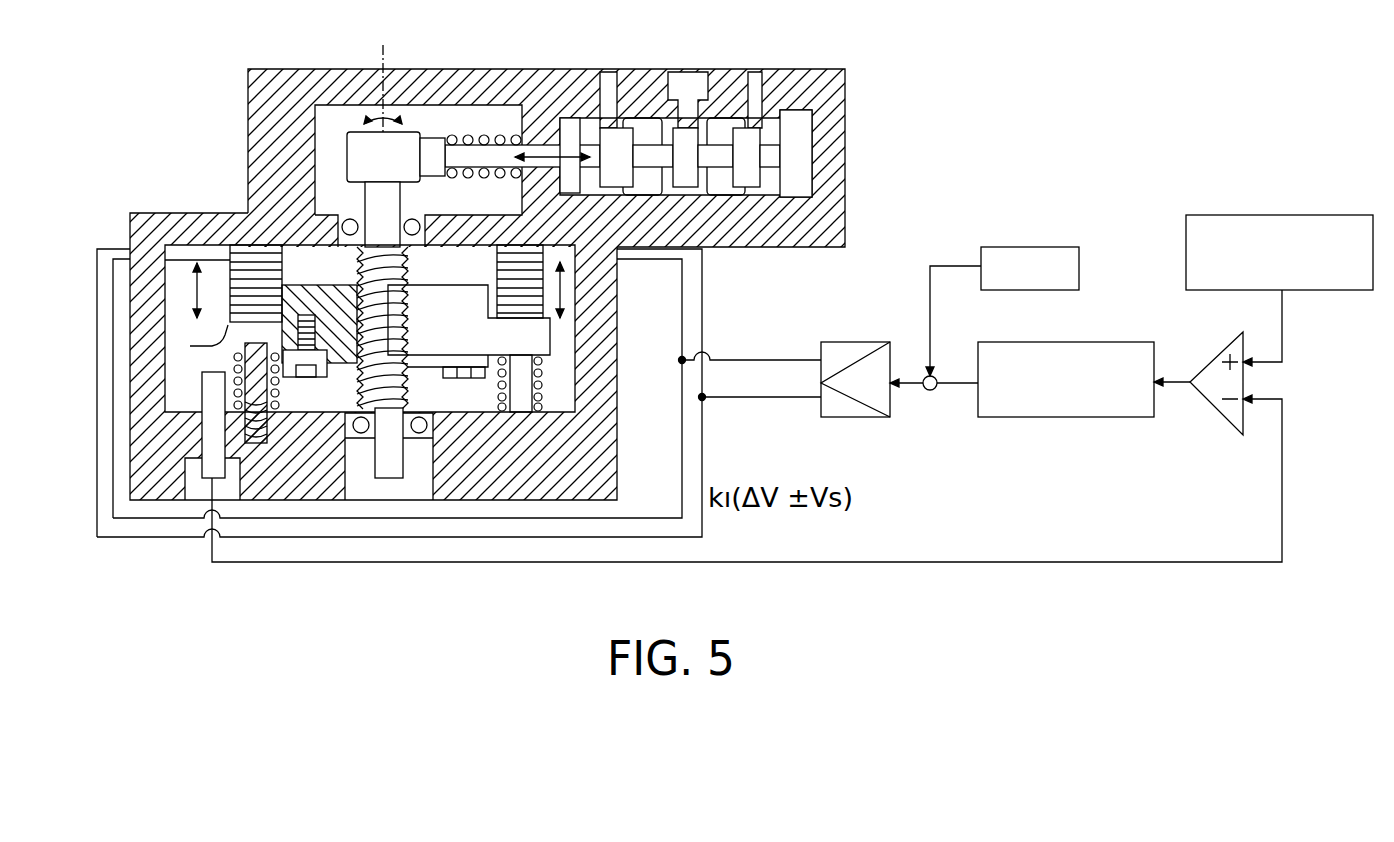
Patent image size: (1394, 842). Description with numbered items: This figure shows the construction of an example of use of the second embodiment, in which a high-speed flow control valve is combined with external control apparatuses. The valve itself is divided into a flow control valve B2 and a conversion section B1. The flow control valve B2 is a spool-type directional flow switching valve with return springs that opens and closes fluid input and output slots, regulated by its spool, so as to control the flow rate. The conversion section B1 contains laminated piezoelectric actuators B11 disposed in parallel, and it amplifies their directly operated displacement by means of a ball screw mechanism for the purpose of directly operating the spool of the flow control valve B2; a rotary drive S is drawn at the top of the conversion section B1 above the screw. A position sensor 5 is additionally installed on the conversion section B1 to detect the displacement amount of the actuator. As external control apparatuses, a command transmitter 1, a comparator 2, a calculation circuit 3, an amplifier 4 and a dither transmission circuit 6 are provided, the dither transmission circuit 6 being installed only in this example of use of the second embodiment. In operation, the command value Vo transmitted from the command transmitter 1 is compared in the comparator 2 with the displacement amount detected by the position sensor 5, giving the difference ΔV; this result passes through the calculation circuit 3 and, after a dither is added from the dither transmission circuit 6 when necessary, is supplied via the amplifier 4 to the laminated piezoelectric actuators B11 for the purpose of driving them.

The command transmitter 1 is at (1283, 213).
The comparator 2 is at (1217, 362).
The calculation circuit 3 is at (1037, 342).
The amplifier 4 is at (848, 342).
The position sensor 5 is at (208, 392).
The dither transmission circuit 6 is at (1025, 247).
The conversion section B1 is at (130, 222).
The flow control valve B2 is at (810, 72).
The laminated piezoelectric actuators B11 is at (265, 278).
The stepping motor S is at (548, 157).